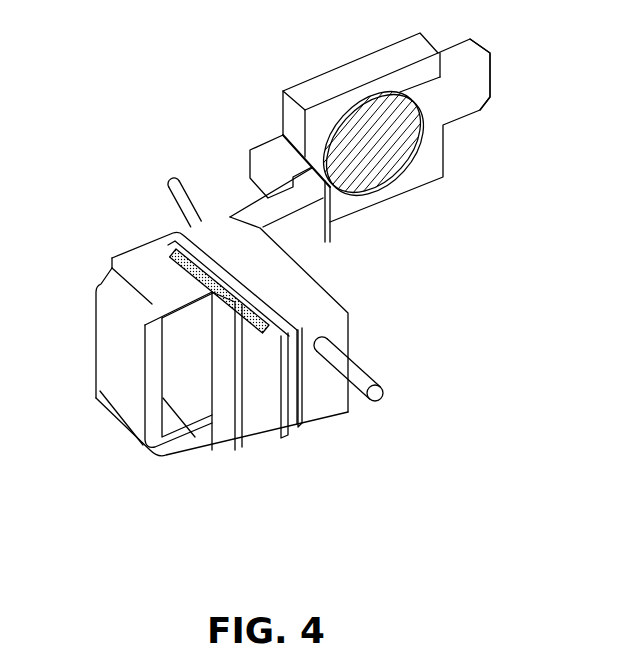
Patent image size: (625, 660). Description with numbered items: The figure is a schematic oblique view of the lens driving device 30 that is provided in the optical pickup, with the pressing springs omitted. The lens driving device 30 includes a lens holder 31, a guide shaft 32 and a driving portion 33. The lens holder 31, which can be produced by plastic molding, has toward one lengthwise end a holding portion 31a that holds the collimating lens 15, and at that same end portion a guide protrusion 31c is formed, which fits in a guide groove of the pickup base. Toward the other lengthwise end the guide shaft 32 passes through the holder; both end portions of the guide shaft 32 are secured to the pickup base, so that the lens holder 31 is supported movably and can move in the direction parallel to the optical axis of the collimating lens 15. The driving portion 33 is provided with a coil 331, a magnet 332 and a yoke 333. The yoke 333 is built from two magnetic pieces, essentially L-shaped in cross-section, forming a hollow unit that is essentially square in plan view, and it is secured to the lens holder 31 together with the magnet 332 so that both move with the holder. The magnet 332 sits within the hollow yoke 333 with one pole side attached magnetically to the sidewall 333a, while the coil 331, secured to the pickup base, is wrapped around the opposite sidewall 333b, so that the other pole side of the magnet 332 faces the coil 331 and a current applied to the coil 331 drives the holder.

The lens driving device 30 is at (112, 97).
The lens holder 31 is at (303, 93).
The holding portion 31a is at (381, 171).
The guide protrusion 31c is at (480, 84).
The collimating lens 15 is at (392, 140).
The guide shaft 32 is at (363, 372).
The driving portion 33 is at (87, 418).
The coil 331 is at (110, 295).
The magnet 332 is at (258, 345).
The yoke 333 is at (148, 250).
The sidewall 333a is at (220, 267).
The sidewall 333b is at (210, 335).